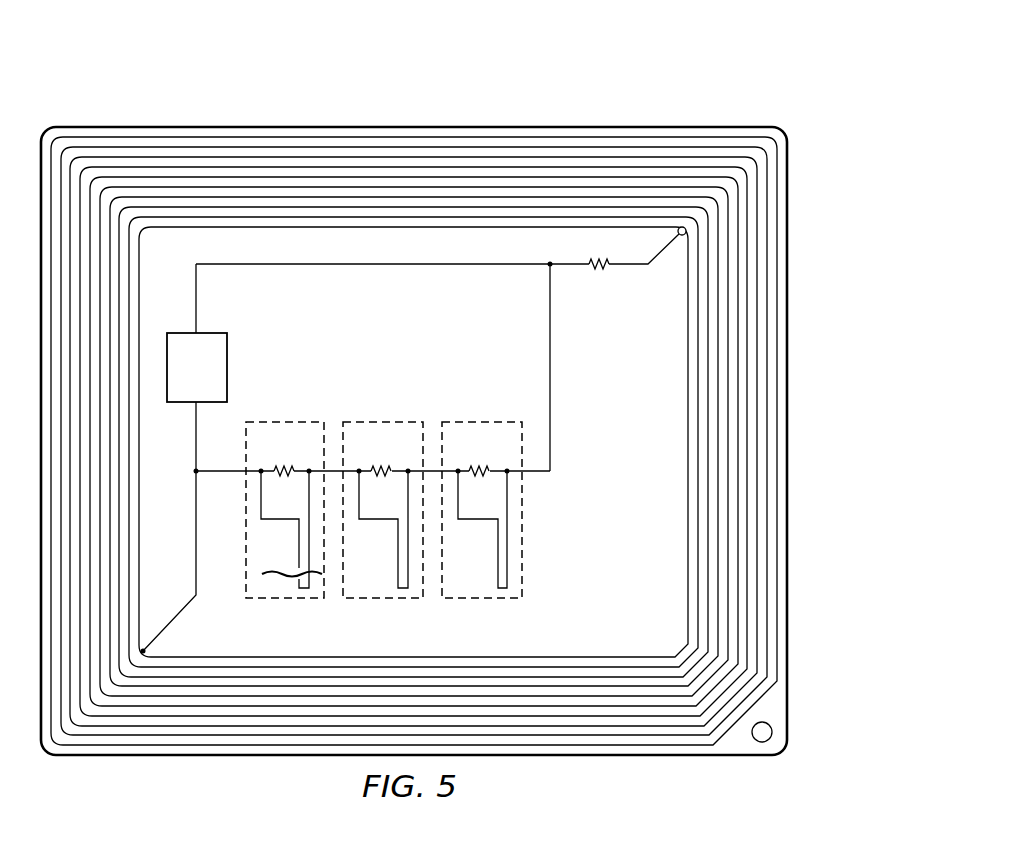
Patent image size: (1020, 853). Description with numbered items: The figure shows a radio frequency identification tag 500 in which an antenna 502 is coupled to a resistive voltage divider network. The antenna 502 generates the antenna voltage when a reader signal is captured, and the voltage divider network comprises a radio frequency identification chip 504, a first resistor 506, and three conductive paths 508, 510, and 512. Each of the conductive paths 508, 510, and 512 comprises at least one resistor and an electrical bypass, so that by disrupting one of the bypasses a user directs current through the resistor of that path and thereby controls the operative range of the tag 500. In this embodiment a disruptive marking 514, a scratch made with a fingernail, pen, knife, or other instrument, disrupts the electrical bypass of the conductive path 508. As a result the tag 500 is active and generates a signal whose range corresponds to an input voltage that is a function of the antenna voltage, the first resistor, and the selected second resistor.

The radio frequency identification tag 500 is at (663, 72).
The antenna 502 is at (413, 125).
The radio frequency identification chip 504 is at (227, 362).
The resistor R1 506 is at (598, 270).
The conductive path 508 is at (308, 420).
The conductive path 510 is at (404, 419).
The conductive path 512 is at (502, 419).
The disruptive marking 514 is at (276, 576).